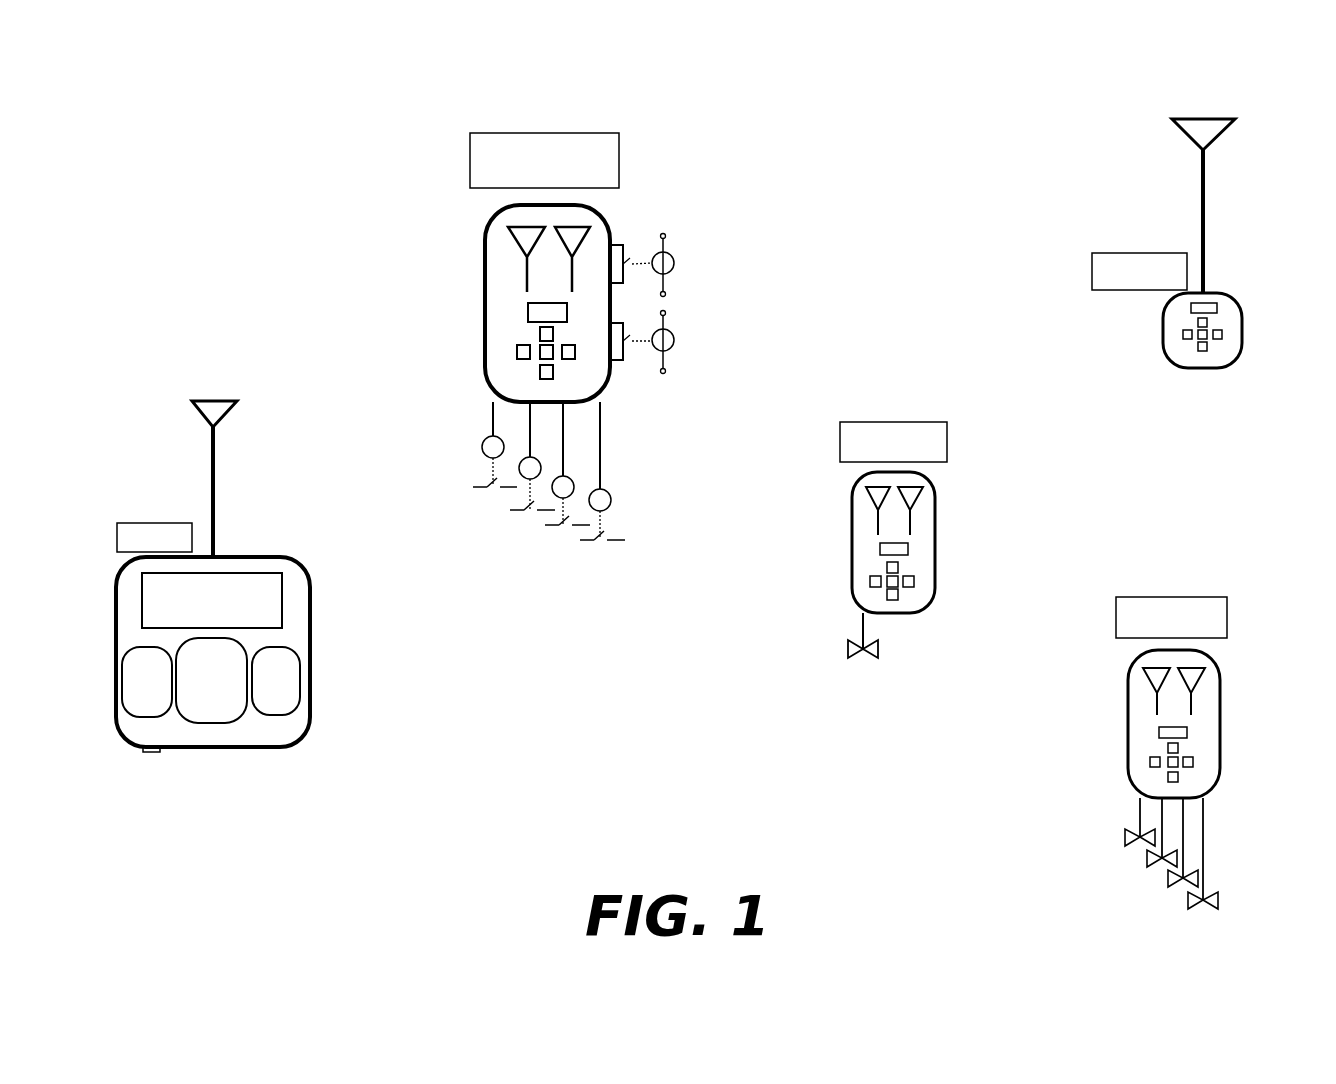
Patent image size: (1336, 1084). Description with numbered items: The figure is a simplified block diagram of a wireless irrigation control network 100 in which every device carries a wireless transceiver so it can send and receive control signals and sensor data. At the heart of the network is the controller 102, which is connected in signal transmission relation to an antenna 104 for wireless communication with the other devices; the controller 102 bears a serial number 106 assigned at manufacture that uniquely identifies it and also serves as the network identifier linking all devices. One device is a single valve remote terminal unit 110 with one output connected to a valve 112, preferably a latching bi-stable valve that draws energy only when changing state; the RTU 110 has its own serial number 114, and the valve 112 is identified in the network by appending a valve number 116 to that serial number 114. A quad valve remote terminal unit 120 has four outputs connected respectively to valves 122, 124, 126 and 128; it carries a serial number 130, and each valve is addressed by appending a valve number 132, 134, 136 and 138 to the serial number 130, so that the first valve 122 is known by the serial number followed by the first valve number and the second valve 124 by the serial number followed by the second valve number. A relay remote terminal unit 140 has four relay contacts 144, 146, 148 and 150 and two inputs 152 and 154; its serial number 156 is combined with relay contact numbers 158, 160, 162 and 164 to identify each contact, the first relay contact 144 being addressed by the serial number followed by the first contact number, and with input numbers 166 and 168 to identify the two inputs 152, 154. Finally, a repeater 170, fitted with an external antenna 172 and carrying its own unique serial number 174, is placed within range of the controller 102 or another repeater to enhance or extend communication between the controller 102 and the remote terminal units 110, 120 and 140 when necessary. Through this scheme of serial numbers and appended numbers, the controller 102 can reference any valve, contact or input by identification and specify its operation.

The wireless irrigation control network 100 is at (892, 199).
The controller 102 is at (258, 556).
The antenna 104 is at (212, 398).
The serial number 106 is at (148, 523).
The single valve remote terminal unit 110 is at (937, 542).
The valve 112 is at (878, 655).
The serial number 114 is at (947, 443).
The valve number 116 is at (825, 640).
The quad valve remote terminal unit 120 is at (1222, 705).
The valve 122 is at (1133, 830).
The valve 124 is at (1168, 852).
The valve 126 is at (1190, 872).
The valve 128 is at (1216, 899).
The serial number 130 is at (1205, 597).
The valve number 132 is at (1095, 836).
The valve number 134 is at (1115, 860).
The valve number 136 is at (1135, 882).
The valve number 138 is at (1158, 904).
The relay remote terminal unit 140 is at (603, 218).
The relay contact 144 is at (487, 478).
The relay contact 146 is at (517, 488).
The relay contact 148 is at (570, 522).
The relay contact 150 is at (602, 530).
The input 152 is at (672, 252).
The input 154 is at (672, 330).
The serial number 156 is at (550, 132).
The relay contact number 158 is at (488, 505).
The relay contact number 160 is at (523, 527).
The relay contact number 162 is at (562, 547).
The relay contact number 164 is at (598, 562).
The input number 166 is at (708, 262).
The input number 168 is at (708, 342).
The repeater 170 is at (1235, 300).
The external antenna 172 is at (1233, 120).
The serial number 174 is at (1118, 253).